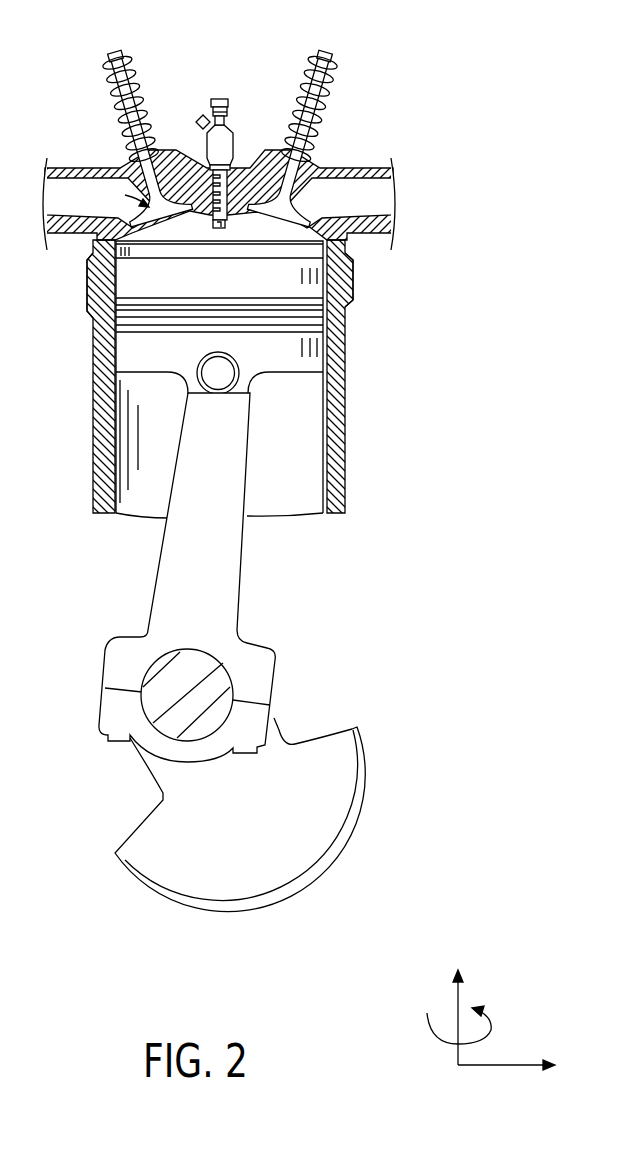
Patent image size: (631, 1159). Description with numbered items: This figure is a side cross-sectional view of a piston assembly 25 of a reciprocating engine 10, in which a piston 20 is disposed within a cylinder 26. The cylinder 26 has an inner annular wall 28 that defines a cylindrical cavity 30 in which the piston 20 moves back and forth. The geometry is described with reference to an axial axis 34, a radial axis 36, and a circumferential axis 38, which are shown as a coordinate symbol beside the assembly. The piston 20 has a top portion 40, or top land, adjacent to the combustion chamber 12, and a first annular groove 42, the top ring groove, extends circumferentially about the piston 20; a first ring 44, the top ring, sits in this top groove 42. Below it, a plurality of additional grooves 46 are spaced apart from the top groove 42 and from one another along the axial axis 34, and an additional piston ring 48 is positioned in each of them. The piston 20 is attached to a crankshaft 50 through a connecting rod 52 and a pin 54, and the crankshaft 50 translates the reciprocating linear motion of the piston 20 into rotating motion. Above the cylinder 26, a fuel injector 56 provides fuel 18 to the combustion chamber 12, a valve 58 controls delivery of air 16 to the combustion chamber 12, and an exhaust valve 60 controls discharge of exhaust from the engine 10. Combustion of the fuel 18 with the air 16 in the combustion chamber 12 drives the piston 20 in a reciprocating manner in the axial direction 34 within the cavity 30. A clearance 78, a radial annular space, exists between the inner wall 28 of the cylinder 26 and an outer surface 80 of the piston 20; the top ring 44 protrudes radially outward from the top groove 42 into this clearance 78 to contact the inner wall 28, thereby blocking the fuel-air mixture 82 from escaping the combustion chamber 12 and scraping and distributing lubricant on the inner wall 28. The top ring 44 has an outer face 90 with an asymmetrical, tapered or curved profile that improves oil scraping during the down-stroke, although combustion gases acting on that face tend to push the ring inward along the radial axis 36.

The reciprocating engine 10 is at (464, 96).
The combustion chamber 12 is at (300, 218).
The air 16 is at (122, 172).
The fuel 18 is at (220, 90).
The piston 20 is at (345, 397).
The piston assembly 25 is at (262, 490).
The cylinder 26 is at (95, 405).
The inner annular wall 28 is at (120, 460).
The cylindrical cavity 30 is at (163, 507).
The axial axis 34 is at (458, 1002).
The radial axis 36 is at (498, 1067).
The circumferential axis 38 is at (490, 1035).
The top portion 40 is at (345, 360).
The first annular groove 42 is at (88, 283).
The first ring 44 is at (177, 300).
The additional grooves 46 is at (330, 322).
The additional piston ring 48 is at (267, 318).
The crankshaft 50 is at (158, 840).
The connecting rod 52 is at (231, 616).
The pin 54 is at (222, 388).
The fuel injector 56 is at (233, 108).
The valve 58 is at (115, 57).
The exhaust valve 60 is at (323, 52).
The clearance 78 is at (353, 305).
The outer surface 80 is at (353, 272).
The fuel-air mixture 82 is at (210, 226).
The outer face 90 is at (110, 310).